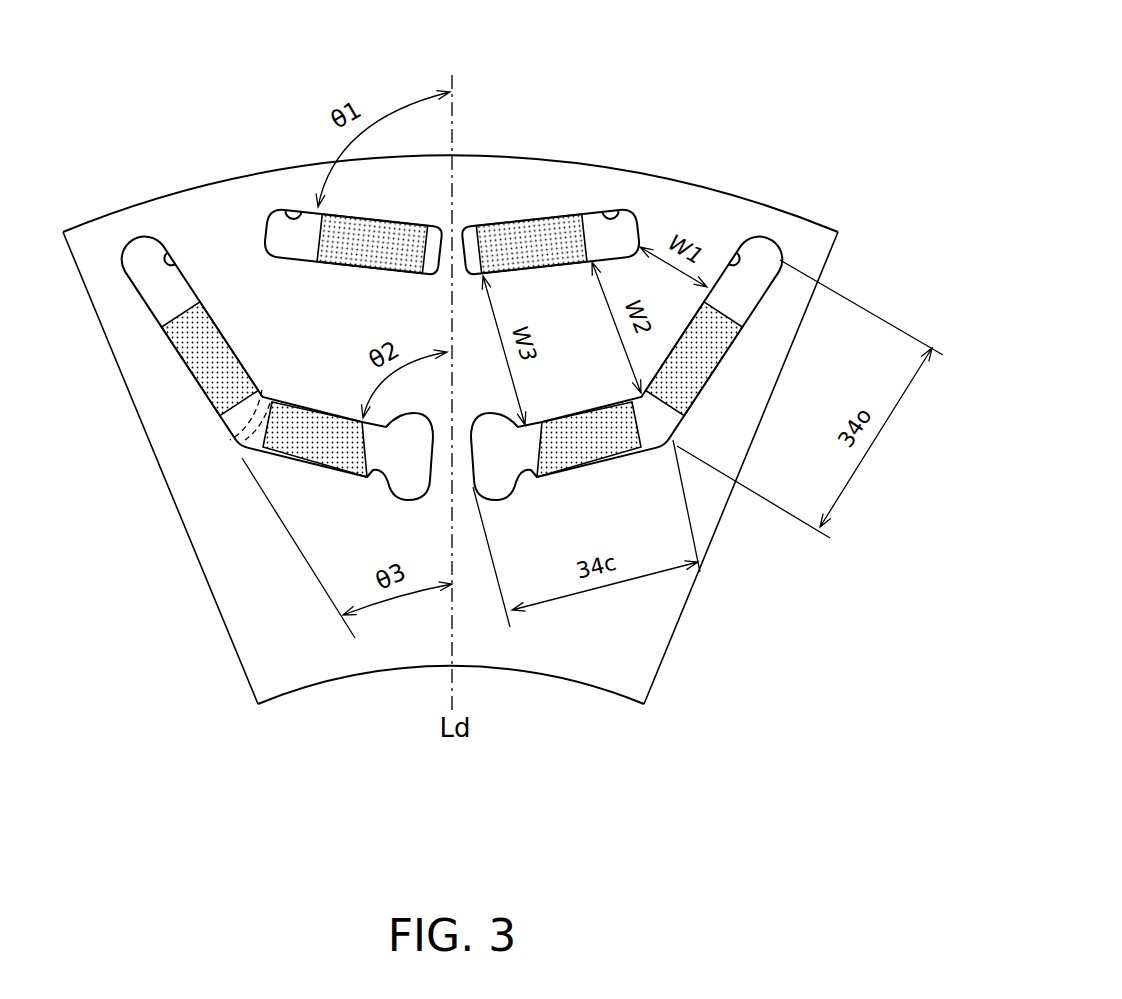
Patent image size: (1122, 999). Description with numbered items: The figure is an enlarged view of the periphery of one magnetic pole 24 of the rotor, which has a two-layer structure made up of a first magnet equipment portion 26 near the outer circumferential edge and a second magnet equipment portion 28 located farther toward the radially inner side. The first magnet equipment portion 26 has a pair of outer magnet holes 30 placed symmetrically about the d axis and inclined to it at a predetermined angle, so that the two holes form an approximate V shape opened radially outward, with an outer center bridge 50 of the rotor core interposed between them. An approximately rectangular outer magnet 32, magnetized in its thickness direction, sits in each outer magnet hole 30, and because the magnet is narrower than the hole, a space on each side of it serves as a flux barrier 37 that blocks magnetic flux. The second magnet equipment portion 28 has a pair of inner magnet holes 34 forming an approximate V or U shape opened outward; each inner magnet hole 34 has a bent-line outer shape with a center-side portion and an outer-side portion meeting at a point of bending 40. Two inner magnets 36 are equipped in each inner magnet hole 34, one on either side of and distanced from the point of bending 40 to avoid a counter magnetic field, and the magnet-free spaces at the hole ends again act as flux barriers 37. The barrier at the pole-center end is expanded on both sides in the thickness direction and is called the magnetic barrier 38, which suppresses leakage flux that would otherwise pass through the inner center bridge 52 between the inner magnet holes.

The magnetic pole 24 is at (720, 66).
The first magnet equipment portion 26 is at (644, 192).
The second magnet equipment portion 28 is at (770, 217).
The outer magnet hole 30 is at (287, 208).
The outer magnet 32 is at (365, 262).
The inner magnet hole 34 is at (173, 265).
The inner magnet 36 is at (200, 362).
The flux barrier 37 is at (155, 285).
The magnetic barrier 38 is at (402, 472).
The point of bending 40 is at (227, 440).
The outer center bridge 50 is at (457, 247).
The inner center bridge 52 is at (462, 473).